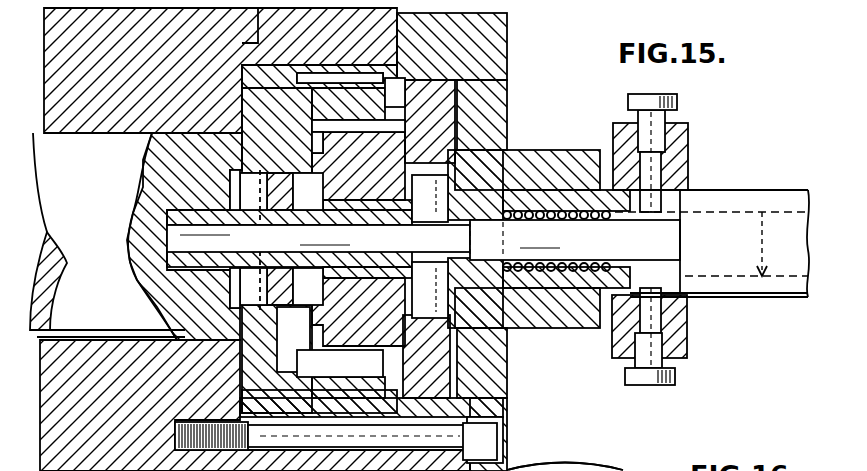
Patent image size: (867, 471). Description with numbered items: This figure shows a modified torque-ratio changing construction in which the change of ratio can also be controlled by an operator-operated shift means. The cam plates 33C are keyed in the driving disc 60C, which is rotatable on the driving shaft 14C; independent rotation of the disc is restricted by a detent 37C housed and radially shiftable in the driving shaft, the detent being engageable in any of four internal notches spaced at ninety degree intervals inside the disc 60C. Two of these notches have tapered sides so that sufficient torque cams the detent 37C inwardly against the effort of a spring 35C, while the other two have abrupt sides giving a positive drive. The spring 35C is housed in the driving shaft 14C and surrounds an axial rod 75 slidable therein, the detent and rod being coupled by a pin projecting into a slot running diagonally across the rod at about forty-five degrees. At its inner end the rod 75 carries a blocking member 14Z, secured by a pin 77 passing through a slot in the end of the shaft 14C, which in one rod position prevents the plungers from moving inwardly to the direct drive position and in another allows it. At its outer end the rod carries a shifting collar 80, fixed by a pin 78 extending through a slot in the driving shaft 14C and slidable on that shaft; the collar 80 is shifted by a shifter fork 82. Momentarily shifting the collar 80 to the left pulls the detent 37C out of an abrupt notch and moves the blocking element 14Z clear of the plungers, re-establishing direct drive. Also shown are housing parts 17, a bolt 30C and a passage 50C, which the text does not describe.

In FIG. 15, the driving shaft 14C is at (783, 200).
In FIG. 15, the blocking member 14Z is at (238, 290).
In FIG. 15, the housing 17 is at (500, 74).
In FIG. 15, the bolt 30C is at (375, 358).
In FIG. 15, the cam plates 33C is at (458, 125).
In FIG. 15, the spring 35C is at (571, 212).
In FIG. 15, the detent 37C is at (508, 338).
In FIG. 15, the passage slot 50C is at (385, 71).
In FIG. 16, the passage slot 50C is at (640, 469).
In FIG. 15, the driving disc 60C is at (480, 118).
In FIG. 15, the axial rod 75 is at (423, 240).
In FIG. 15, the pin 77 is at (150, 193).
In FIG. 15, the pin 78 is at (657, 169).
In FIG. 15, the shifting collar 80 is at (688, 137).
In FIG. 15, the shifter fork 82 is at (677, 101).